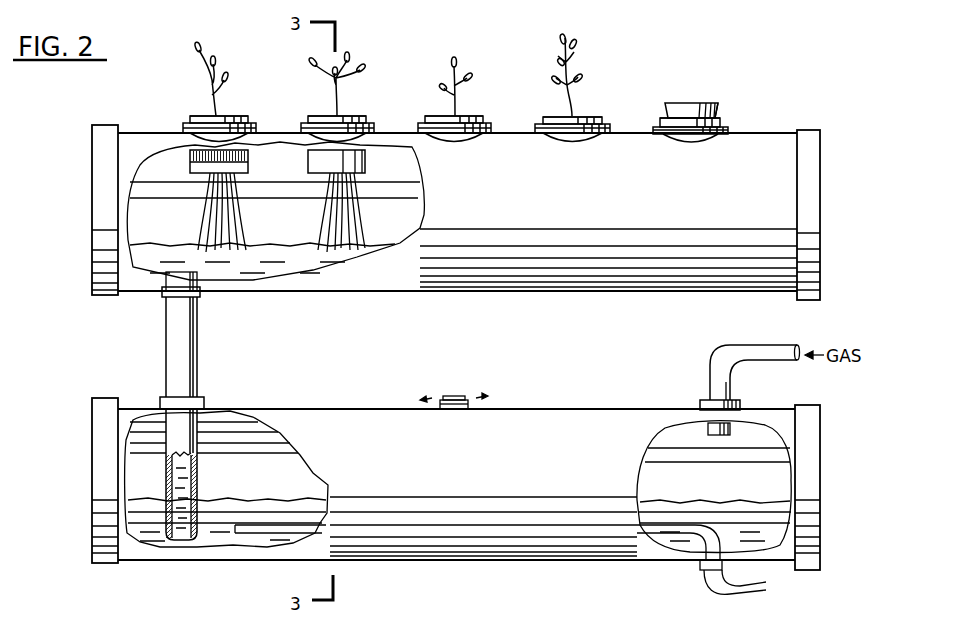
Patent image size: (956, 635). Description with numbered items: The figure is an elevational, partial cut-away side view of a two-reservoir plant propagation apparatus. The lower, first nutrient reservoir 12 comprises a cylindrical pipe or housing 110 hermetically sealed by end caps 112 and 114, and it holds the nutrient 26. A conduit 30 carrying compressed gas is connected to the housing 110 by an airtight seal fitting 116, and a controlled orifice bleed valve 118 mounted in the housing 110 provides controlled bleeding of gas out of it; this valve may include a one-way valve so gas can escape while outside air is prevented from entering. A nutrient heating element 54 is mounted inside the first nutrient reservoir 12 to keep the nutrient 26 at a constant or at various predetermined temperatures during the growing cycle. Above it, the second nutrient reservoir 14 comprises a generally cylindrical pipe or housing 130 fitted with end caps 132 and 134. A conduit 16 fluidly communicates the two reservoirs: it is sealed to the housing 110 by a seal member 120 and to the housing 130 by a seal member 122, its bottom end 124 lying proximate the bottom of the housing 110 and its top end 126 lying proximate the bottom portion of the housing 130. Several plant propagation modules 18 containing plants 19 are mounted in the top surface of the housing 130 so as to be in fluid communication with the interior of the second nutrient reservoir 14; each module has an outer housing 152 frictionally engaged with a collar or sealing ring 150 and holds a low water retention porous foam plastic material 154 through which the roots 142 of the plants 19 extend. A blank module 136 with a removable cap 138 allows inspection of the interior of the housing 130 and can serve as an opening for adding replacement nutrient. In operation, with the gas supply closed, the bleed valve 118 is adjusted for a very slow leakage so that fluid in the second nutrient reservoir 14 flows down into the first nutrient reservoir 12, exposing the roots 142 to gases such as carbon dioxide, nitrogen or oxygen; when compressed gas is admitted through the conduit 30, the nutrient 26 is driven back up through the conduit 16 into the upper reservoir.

The first nutrient reservoir 12 is at (521, 402).
The second nutrient reservoir 14 is at (554, 294).
The conduit 16 is at (200, 351).
The plant propagation module 18 is at (236, 118).
The plant 19 is at (200, 60).
The nutrient 26 is at (706, 502).
The conduit 30 is at (755, 346).
The nutrient heating element 54 is at (322, 529).
The pipe or housing 110 is at (480, 560).
The end cap 112 is at (822, 481).
The end cap 114 is at (92, 489).
The airtight seal fitting 116 is at (740, 403).
The controlled orifice bleed valve 118 is at (455, 396).
The seal member 120 is at (204, 402).
The seal member 122 is at (203, 294).
The bottom end 124 is at (186, 542).
The top end 126 is at (192, 272).
The pipe or housing 130 is at (430, 291).
The end cap 132 is at (822, 207).
The end cap 134 is at (92, 205).
The blank module 136 is at (689, 98).
The cap 138 is at (706, 108).
The roots 142 is at (205, 210).
The collar or sealing ring 150 is at (183, 128).
The outer housing 152 is at (190, 116).
The porous foam plastic material 154 is at (308, 160).